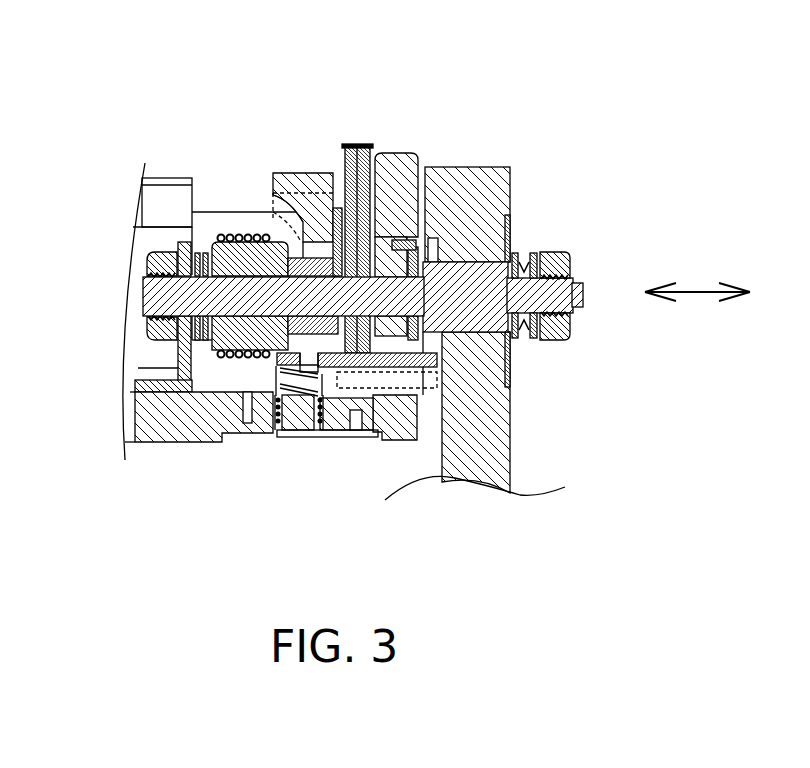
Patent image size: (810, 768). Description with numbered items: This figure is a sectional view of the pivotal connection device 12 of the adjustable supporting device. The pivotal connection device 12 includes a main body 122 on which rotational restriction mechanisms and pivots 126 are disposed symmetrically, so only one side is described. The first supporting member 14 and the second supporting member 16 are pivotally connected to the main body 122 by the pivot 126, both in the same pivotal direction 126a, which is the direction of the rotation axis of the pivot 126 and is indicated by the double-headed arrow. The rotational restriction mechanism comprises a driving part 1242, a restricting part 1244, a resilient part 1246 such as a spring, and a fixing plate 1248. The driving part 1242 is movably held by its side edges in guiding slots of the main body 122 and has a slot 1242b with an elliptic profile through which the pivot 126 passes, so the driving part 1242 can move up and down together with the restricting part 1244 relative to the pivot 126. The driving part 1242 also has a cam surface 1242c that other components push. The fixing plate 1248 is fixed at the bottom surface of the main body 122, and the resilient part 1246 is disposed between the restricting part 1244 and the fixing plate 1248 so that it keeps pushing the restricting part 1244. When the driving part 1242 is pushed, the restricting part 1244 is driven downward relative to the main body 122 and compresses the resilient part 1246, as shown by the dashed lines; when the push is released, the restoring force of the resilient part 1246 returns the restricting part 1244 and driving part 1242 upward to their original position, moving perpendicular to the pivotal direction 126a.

The pivotal connection device 12 is at (142, 87).
The main body 122 is at (178, 428).
The pivot 126 is at (182, 300).
The pivotal direction 126a is at (697, 297).
The driving part 1242 is at (310, 185).
The slot 1242b is at (297, 245).
The cam surface 1242c is at (283, 176).
The restricting part 1244 is at (393, 365).
The resilient part 1246 is at (300, 432).
The fixing plate 1248 is at (333, 437).
The first supporting member 14 is at (346, 145).
The second supporting member 16 is at (458, 168).